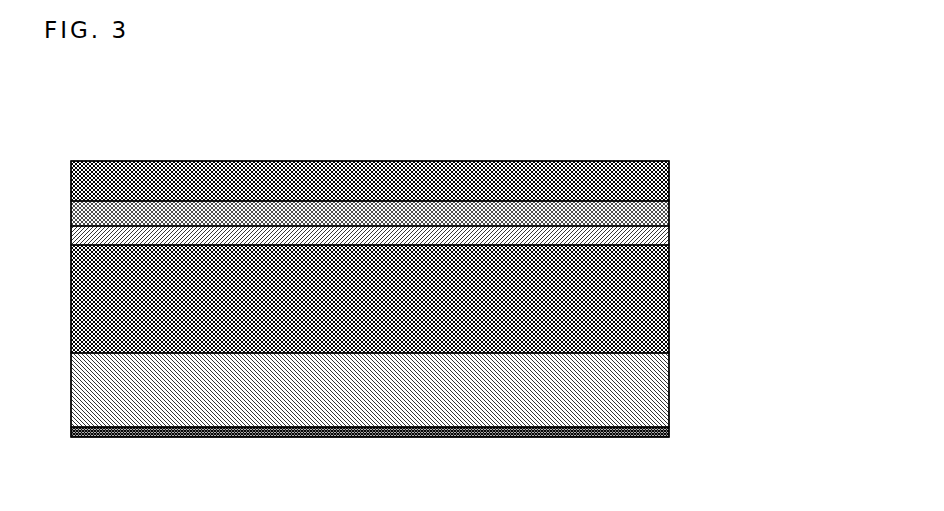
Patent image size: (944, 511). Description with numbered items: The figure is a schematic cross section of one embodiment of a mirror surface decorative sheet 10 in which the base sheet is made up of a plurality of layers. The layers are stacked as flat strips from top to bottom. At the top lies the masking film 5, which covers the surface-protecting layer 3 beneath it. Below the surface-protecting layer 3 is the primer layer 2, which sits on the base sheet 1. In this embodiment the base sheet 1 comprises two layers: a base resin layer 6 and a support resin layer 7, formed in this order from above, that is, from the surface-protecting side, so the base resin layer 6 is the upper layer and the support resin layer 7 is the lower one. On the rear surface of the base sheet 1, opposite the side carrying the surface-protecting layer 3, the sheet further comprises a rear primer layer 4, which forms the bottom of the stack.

The mirror surface decorative sheet 10 is at (470, 257).
The masking film 5 is at (663, 167).
The surface-protecting layer 3 is at (663, 200).
The primer layer 2 is at (663, 229).
The base sheet 1 is at (470, 336).
The base resin layer 6 is at (662, 299).
The support resin layer 7 is at (662, 386).
The rear primer layer 4 is at (662, 418).